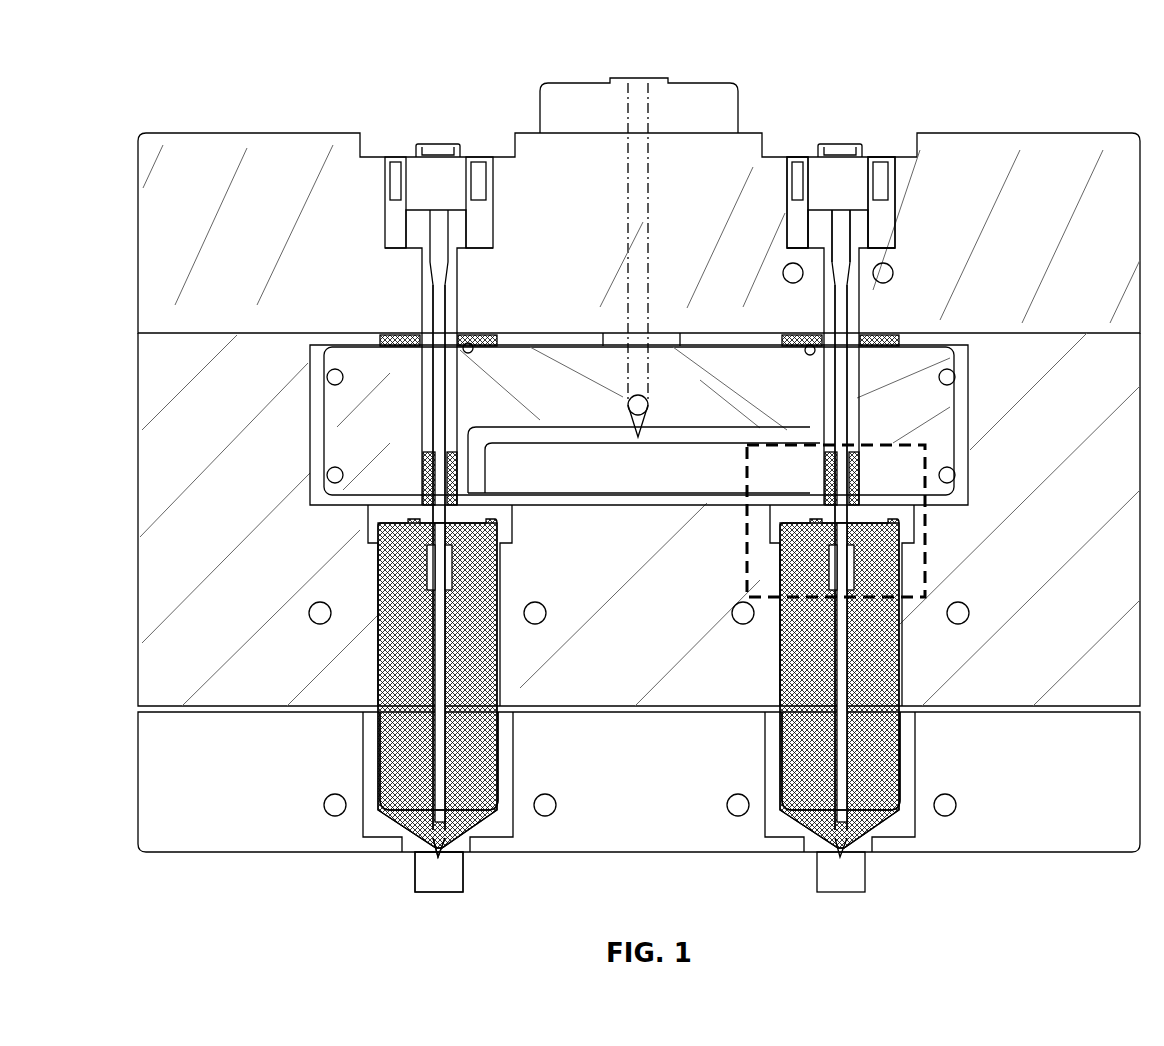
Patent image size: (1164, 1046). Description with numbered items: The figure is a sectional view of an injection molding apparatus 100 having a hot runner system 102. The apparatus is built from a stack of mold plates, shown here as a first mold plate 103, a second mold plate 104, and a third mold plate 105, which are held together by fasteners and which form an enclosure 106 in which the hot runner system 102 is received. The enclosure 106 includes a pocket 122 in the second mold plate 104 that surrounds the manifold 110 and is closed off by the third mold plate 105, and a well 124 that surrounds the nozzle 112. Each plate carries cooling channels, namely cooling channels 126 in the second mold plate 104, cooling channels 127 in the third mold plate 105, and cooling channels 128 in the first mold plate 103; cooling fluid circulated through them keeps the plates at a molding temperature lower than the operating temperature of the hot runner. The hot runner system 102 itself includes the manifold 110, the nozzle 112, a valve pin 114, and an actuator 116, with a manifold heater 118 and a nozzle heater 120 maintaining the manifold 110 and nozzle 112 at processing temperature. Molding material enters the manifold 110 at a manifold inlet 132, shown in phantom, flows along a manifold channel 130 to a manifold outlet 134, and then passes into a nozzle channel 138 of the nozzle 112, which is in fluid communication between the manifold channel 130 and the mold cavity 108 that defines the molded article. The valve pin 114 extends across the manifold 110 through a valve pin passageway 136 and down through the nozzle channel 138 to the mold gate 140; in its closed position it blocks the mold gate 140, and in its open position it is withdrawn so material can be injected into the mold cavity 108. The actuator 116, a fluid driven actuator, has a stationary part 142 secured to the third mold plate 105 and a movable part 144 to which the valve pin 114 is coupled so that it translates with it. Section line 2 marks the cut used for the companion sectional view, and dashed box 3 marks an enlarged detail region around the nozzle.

The injection molding apparatus 100 is at (148, 98).
The hot runner system 102 is at (312, 270).
The first mold plate 103 is at (183, 790).
The second mold plate 104 is at (183, 611).
The third mold plate 105 is at (178, 304).
The enclosure 106 is at (320, 358).
The mold cavity 108 is at (435, 893).
The manifold 110 is at (360, 432).
The nozzle 112 is at (405, 654).
The valve pin 114 is at (440, 692).
The actuator 116 is at (905, 188).
The manifold heater 118 is at (956, 377).
The nozzle heater 120 is at (893, 660).
The pocket 122 is at (956, 478).
The well 124 is at (880, 686).
The cooling channel 126 is at (960, 614).
The cooling channel 127 is at (884, 274).
The cooling channel 128 is at (947, 806).
The manifold channel 130 is at (540, 437).
The manifold inlet 132 is at (642, 393).
The manifold outlet 134 is at (486, 474).
The valve pin passageway 136 is at (850, 423).
The nozzle channel 138 is at (435, 748).
The mold gate 140 is at (446, 852).
The stationary part 142 is at (878, 210).
The movable part 144 is at (862, 240).
The section line 2- 2 is at (840, 133).
The detail area 3 is at (926, 524).